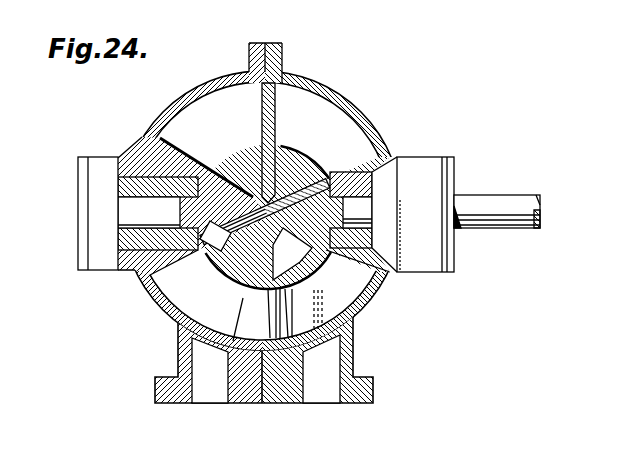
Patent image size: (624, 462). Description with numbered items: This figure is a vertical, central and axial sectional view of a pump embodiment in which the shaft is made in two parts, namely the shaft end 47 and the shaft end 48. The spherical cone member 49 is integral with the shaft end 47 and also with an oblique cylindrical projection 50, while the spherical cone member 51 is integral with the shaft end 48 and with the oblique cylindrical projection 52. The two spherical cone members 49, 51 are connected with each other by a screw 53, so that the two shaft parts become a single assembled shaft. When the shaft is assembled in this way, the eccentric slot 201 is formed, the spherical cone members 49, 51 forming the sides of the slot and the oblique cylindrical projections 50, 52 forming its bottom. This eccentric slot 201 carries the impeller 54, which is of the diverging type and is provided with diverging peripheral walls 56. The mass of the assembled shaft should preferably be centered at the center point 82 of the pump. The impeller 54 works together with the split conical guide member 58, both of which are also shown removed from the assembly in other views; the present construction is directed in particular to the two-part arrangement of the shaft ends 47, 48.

The shaft end 47 is at (130, 271).
The shaft end 48 is at (394, 155).
The spherical cone member 49 is at (235, 279).
The oblique cylindrical projection 50 is at (253, 195).
The spherical cone member 51 is at (300, 158).
The oblique cylindrical projection 52 is at (312, 264).
The screw 53 is at (208, 271).
The impeller 54 is at (282, 85).
The diverging peripheral walls 56 is at (146, 150).
The guide member 58 is at (222, 343).
The center point 82 is at (316, 166).
The eccentric slot 201 is at (262, 148).